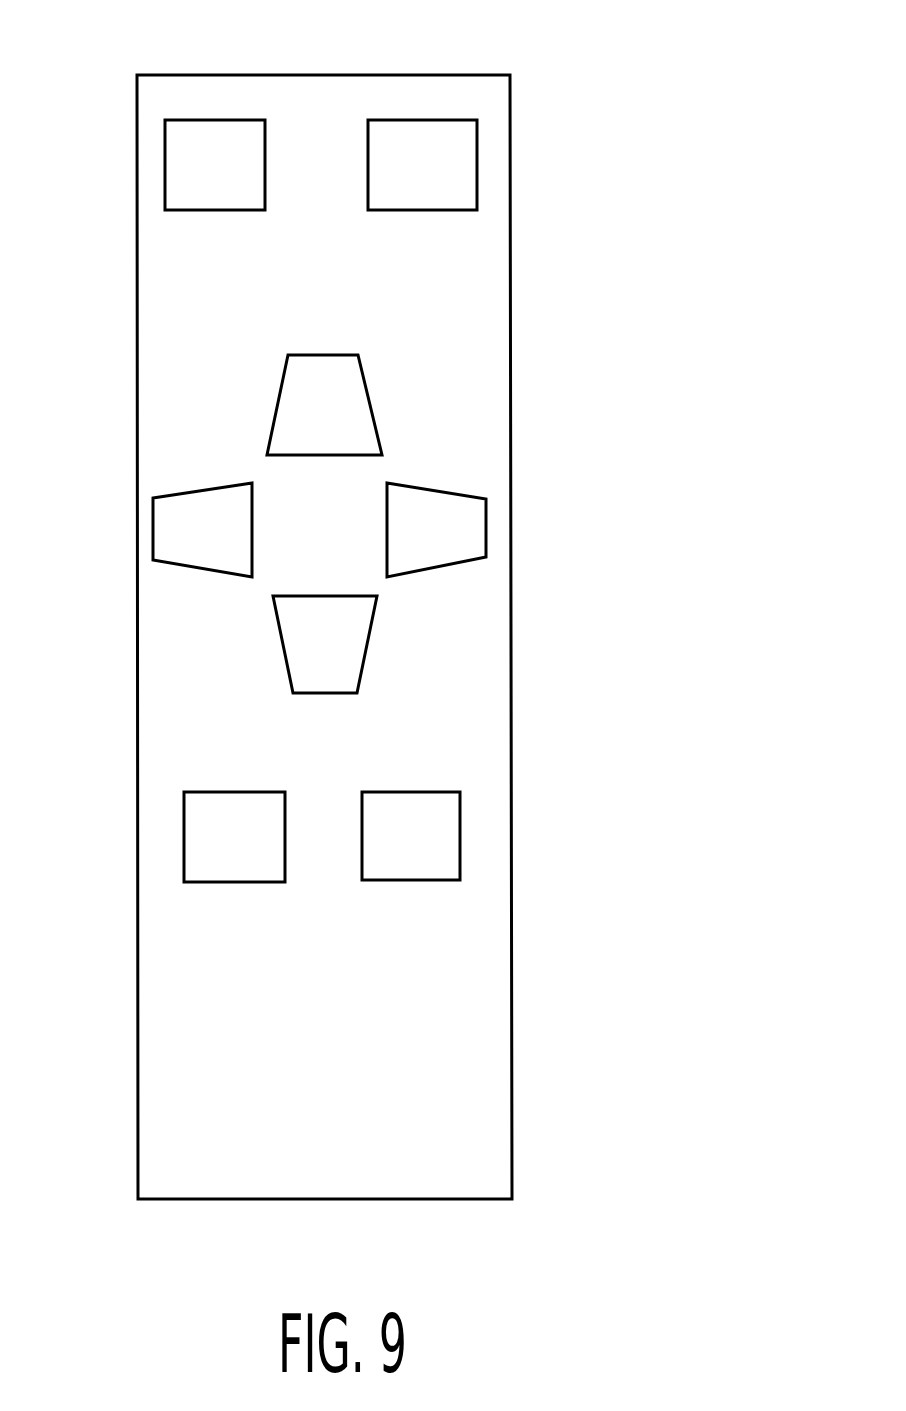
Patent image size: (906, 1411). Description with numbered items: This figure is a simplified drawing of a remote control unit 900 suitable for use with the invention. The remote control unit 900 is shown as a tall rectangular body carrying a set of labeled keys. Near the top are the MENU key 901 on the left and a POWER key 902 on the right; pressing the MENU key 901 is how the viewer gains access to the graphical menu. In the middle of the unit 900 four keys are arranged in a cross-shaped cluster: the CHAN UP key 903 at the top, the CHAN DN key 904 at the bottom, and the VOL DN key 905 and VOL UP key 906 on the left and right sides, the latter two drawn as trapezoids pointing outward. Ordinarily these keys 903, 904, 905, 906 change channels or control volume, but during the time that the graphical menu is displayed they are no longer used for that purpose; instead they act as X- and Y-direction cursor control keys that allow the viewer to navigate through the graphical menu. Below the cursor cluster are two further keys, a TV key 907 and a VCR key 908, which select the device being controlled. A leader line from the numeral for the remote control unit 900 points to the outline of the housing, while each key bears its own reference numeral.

The remote control unit 900 is at (376, 75).
The MENU key 901 is at (165, 178).
The power button 902 is at (477, 176).
The CHAN UP key 903 is at (370, 400).
The CHAN DN key 904 is at (370, 641).
The VOL UP key 905 is at (153, 528).
The VOL DN key 906 is at (486, 530).
The TV button 907 is at (184, 832).
The VCR button 908 is at (460, 842).